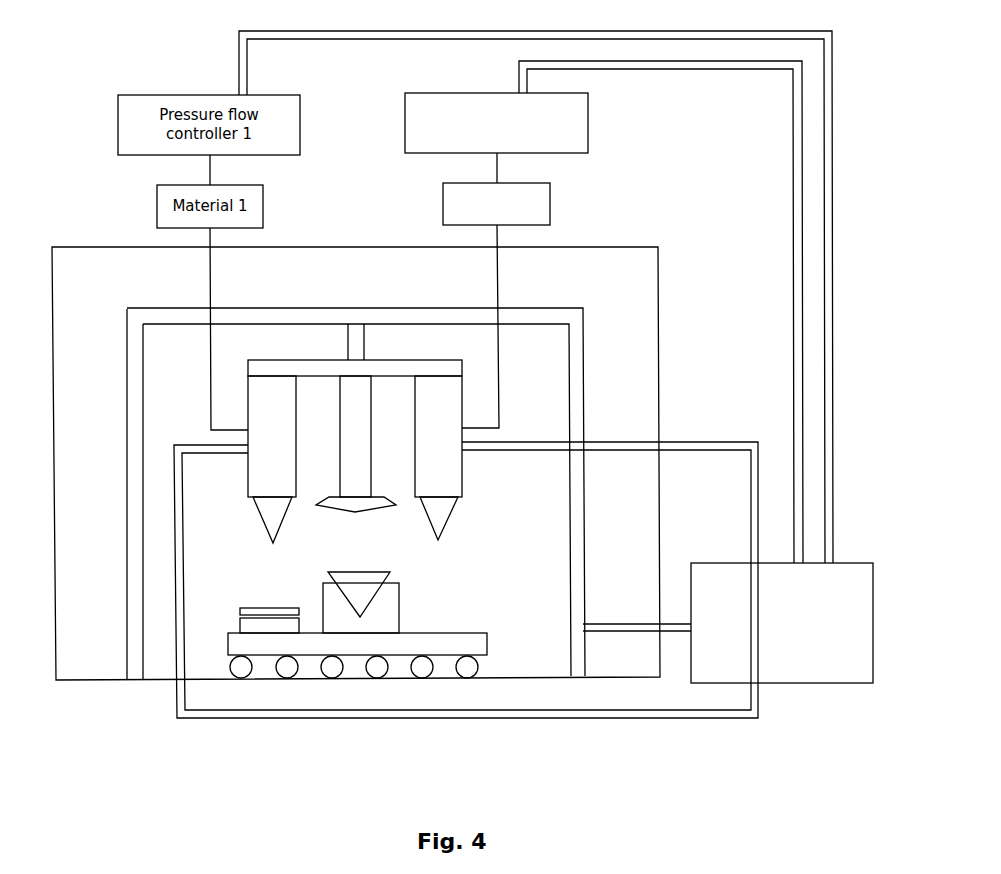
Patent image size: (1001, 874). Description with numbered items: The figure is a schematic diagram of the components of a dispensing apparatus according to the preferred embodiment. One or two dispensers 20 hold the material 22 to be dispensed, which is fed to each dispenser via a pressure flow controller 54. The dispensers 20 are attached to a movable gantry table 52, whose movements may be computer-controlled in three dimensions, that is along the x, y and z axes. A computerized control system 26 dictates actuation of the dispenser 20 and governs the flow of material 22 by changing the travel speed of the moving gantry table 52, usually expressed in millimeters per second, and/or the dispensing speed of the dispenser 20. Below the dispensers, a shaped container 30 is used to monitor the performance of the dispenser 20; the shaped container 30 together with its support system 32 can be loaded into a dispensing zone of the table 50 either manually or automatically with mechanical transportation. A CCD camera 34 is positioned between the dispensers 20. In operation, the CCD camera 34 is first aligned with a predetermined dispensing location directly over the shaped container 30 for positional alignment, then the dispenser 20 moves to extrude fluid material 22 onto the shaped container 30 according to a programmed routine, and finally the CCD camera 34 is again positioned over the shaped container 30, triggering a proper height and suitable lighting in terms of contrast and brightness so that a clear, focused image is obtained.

The dispenser 20 is at (248, 495).
The material 22 is at (552, 205).
The computerized control system 26 is at (793, 665).
The shaped container 30 is at (316, 573).
The support system 32 is at (415, 625).
The CCD camera 34 is at (374, 510).
The table 50 is at (485, 669).
The gantry table 52 is at (364, 338).
The pressure flow controller 54 is at (590, 118).